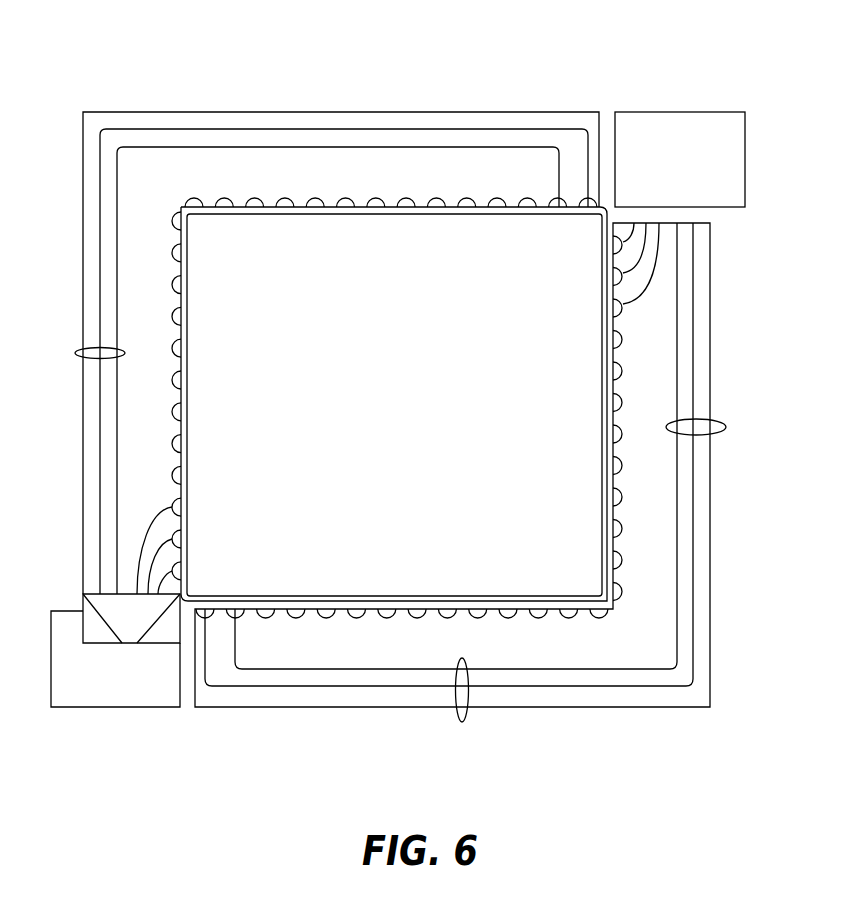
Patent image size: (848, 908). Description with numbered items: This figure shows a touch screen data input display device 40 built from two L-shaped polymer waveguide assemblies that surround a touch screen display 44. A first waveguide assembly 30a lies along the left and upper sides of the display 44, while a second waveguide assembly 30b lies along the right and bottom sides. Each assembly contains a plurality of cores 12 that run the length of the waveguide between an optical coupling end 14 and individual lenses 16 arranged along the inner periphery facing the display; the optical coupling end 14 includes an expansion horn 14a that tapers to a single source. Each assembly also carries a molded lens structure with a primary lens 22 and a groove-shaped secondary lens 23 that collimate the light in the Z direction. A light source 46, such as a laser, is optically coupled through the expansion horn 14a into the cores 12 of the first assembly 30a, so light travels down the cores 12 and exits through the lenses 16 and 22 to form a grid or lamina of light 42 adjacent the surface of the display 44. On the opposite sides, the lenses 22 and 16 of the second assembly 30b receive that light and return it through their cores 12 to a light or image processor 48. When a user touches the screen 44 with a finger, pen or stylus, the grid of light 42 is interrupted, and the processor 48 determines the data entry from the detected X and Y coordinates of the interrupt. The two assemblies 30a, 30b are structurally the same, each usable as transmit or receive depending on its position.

The cores 12 is at (75, 353).
The optical coupling end 14 is at (83, 594).
The expansion horn 14a is at (130, 627).
The lenses 16 is at (375, 200).
The primary refractive surface or lens 22 is at (443, 216).
The secondary refractive surface or lens 23 is at (486, 200).
The first waveguide assembly 30a is at (512, 112).
The second waveguide assembly 30b is at (710, 672).
The display device 40 is at (210, 758).
The grid or lamina of light 42 is at (404, 408).
The touch screen display 44 is at (300, 228).
The light source 46 is at (129, 670).
The light or image processor 48 is at (692, 170).